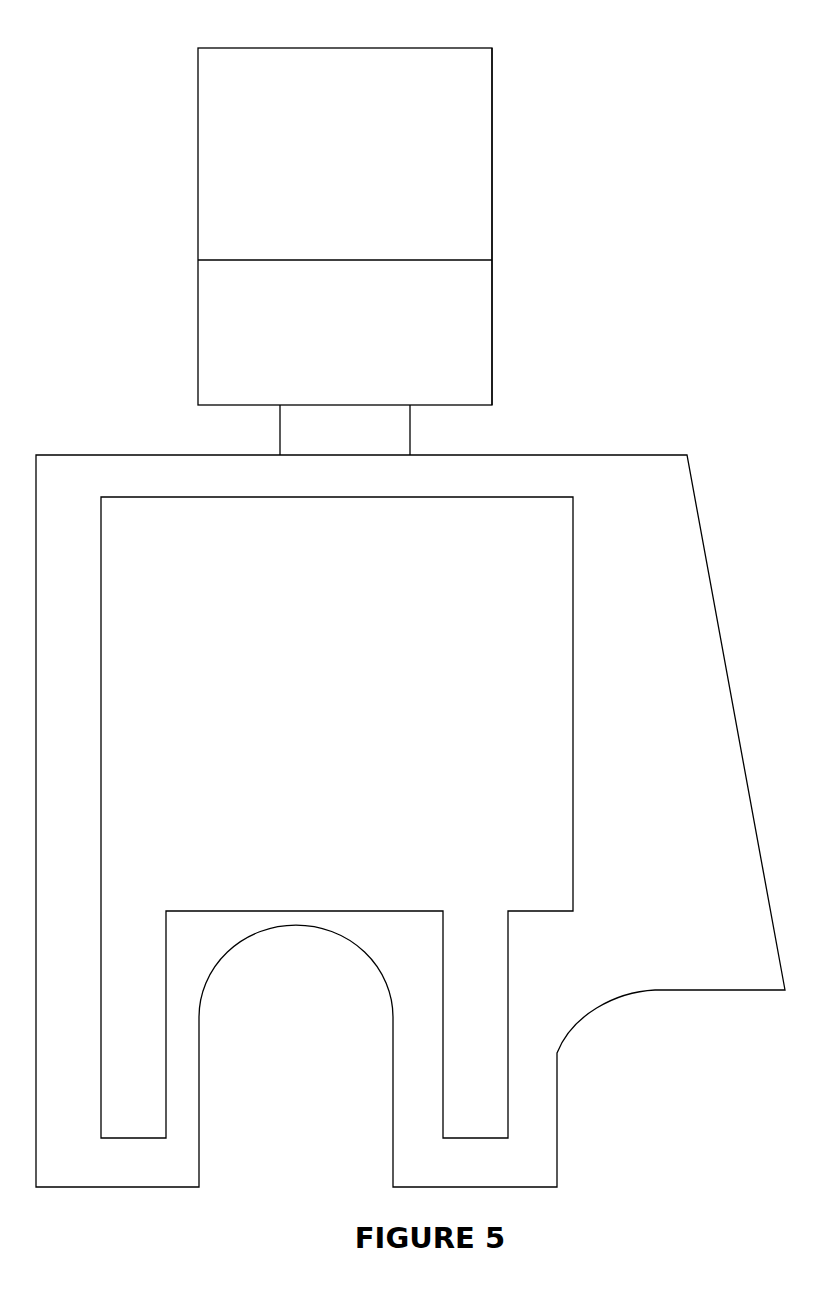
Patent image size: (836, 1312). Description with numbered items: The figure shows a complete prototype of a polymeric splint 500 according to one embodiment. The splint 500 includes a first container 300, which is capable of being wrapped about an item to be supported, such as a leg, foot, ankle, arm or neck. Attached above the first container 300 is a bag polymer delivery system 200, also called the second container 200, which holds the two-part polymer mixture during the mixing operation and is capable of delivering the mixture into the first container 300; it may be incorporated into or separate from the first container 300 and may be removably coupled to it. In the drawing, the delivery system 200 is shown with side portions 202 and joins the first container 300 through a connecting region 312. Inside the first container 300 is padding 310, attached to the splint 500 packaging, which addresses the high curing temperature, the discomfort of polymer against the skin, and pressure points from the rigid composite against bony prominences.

The polymeric splint 500 is at (129, 136).
The polymer delivery system 200 is at (213, 52).
The module side wall 202 is at (492, 150).
The connector passage 312 is at (410, 430).
The first container 300 is at (115, 450).
The padding 310 is at (573, 552).